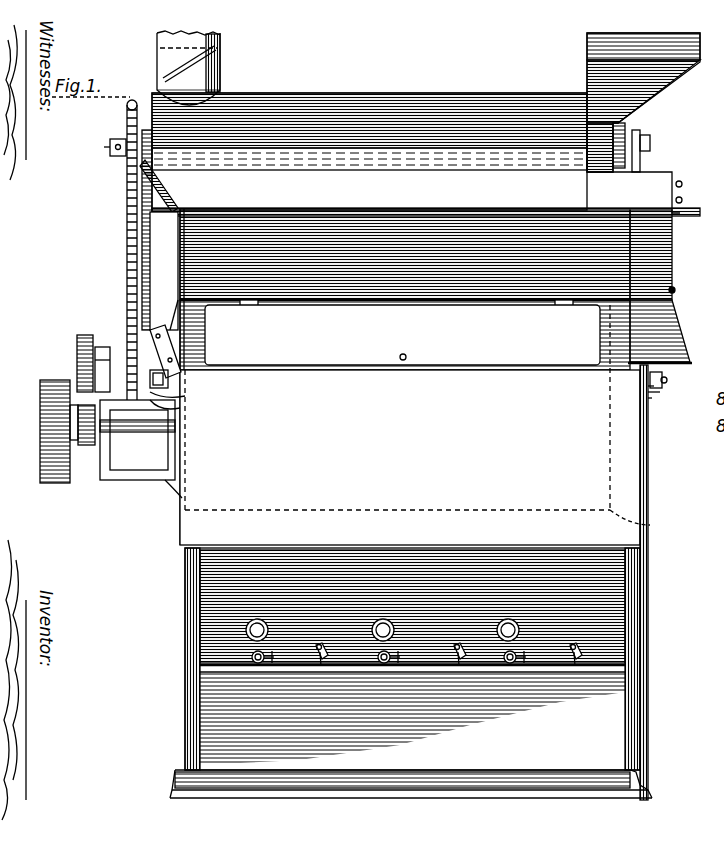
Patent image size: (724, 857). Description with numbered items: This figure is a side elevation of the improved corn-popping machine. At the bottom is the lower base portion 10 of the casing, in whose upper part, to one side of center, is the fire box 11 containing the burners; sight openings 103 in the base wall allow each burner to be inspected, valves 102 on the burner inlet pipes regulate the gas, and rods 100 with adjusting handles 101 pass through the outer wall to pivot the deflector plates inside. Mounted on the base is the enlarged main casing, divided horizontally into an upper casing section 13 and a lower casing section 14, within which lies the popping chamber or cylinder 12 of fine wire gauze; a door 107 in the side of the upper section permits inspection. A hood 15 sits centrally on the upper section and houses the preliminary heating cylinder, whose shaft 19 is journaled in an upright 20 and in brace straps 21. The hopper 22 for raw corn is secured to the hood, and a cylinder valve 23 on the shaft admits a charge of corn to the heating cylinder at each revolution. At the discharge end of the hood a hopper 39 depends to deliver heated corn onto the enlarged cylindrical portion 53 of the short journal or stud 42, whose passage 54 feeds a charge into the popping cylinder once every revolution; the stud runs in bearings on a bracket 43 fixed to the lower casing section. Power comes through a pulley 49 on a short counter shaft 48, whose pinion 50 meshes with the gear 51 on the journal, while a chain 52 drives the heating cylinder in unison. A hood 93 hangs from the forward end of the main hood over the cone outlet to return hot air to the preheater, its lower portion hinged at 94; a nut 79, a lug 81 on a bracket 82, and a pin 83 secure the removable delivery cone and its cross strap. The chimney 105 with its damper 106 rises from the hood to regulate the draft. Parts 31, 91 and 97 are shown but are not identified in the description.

The lower base portion 10 is at (402, 335).
The fire box 11 is at (215, 600).
The popping chamber or cylinder 12 is at (642, 522).
The upper casing section 13 is at (620, 350).
The lower casing section 14 is at (410, 425).
The hood 15 is at (475, 192).
The shaft 19 is at (110, 150).
The upright 20 is at (648, 152).
The brace straps 21 is at (160, 195).
The hopper 22 is at (672, 85).
The cylinder valve 23 is at (628, 128).
The shaft 31 is at (690, 211).
The hopper 39 is at (168, 272).
The short journal or stud 42 is at (180, 408).
The bracket 43 is at (160, 478).
The short counter shaft 48 is at (133, 432).
The pulley 49 is at (48, 417).
The pinion 50 is at (83, 445).
The gear 51 is at (77, 347).
The chain 52 is at (126, 232).
The enlarged cylindrical portion 53 is at (185, 396).
The passage 54 is at (168, 380).
The nut 79 is at (618, 633).
The lug 81 is at (666, 379).
The bracket 82 is at (650, 398).
The pin 83 is at (660, 392).
The standard 91 is at (648, 440).
The hood 93 is at (672, 250).
The hinge 94 is at (676, 290).
The lever 97 is at (648, 388).
The rods 100 is at (320, 660).
The adjusting handles 101 is at (325, 665).
The valves 102 is at (390, 650).
The sight openings 103 is at (386, 620).
The ventilation flue or chimney 105 is at (220, 50).
The damper 106 is at (160, 48).
The door 107 is at (405, 355).